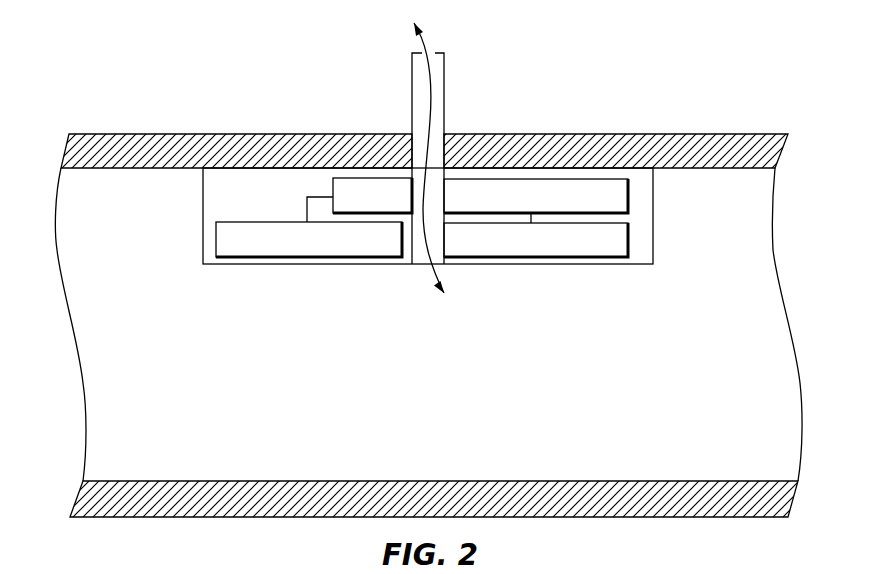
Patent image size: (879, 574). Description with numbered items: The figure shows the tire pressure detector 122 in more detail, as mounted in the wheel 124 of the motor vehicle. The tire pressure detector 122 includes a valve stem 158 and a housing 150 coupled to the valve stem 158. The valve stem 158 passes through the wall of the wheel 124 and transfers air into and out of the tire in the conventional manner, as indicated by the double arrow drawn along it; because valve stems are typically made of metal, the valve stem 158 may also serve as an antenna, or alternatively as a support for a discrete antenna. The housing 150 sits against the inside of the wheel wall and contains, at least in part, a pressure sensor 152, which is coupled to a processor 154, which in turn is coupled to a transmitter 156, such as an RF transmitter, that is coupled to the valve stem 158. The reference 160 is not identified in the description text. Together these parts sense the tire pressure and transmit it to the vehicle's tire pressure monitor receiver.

The tire pressure detector 122 is at (587, 78).
The wheel 124 is at (374, 386).
The housing 150 is at (613, 267).
The pressure sensor 152 is at (286, 251).
The processor 154 is at (352, 209).
The transmitter 156 is at (509, 251).
The valve stem 158 is at (411, 77).
The wall 160 is at (187, 133).